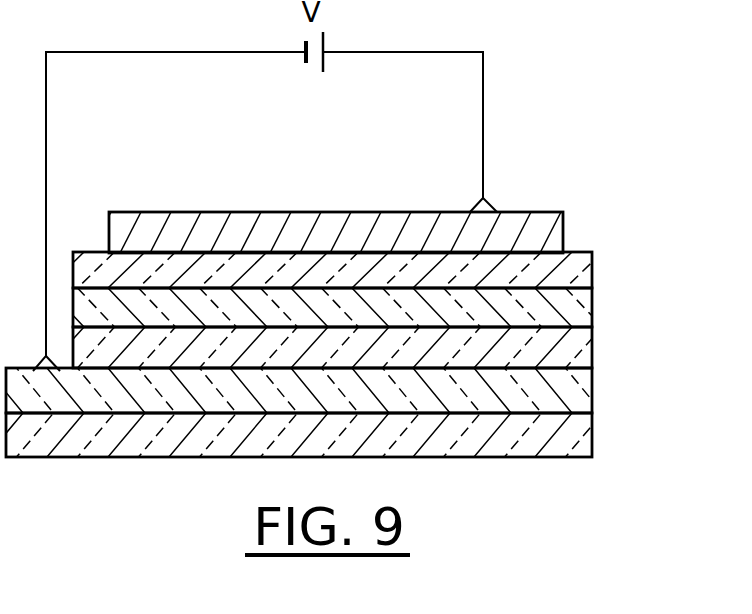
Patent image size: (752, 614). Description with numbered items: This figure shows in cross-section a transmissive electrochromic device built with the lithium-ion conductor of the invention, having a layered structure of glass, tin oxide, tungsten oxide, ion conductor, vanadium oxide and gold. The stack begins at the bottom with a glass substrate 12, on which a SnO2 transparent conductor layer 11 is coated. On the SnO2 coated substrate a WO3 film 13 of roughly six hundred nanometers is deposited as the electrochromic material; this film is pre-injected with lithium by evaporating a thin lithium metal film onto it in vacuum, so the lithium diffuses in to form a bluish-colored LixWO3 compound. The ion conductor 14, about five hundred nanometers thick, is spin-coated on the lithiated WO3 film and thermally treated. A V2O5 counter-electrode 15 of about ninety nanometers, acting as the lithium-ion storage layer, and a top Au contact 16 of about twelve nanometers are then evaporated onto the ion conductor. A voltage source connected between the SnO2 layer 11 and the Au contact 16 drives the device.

The SnO2 layer 11 is at (592, 396).
The glass substrate 12 is at (592, 438).
The WO3 film 13 is at (592, 353).
The ion conductor 14 is at (592, 313).
The V2O5 counter-electrode 15 is at (592, 276).
The Au contact 16 is at (563, 233).